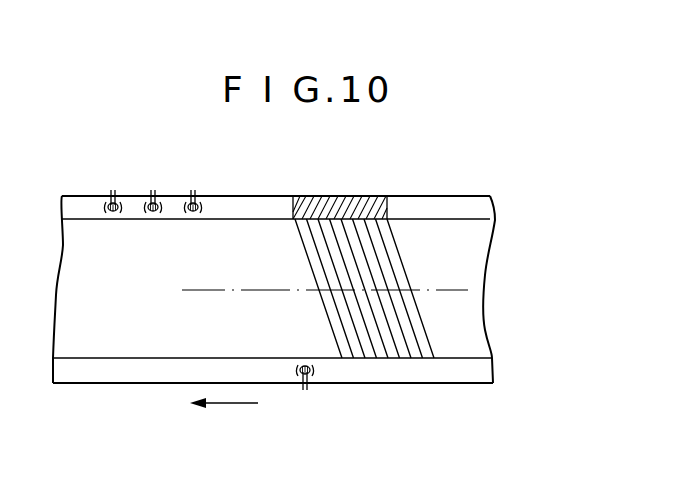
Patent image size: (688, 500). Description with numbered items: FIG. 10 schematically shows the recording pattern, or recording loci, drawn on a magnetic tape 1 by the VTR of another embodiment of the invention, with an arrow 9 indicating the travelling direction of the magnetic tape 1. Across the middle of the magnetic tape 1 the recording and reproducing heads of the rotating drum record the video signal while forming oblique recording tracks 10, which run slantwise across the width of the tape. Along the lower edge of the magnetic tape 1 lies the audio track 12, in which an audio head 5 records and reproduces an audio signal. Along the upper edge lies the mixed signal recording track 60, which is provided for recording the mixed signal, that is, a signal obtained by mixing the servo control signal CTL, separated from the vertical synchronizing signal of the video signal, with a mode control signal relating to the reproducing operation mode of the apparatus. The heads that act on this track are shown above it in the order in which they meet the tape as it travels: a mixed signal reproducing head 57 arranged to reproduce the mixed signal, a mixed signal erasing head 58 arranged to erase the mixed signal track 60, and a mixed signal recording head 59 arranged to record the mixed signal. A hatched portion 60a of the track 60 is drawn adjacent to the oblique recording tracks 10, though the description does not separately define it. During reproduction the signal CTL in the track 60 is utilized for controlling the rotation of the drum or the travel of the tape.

The magnetic tape 1 is at (482, 260).
The audio head 5 is at (305, 392).
The arrow 9 is at (222, 405).
The oblique recording tracks 10 is at (390, 240).
The audio track 12 is at (464, 378).
The mixed signal reproducing head 57 is at (193, 188).
The mixed signal erasing head 58 is at (153, 188).
The mixed signal recording head 59 is at (113, 188).
The mixed signal recording track 60 is at (470, 200).
The hatched portion of upper strip 60a is at (347, 198).